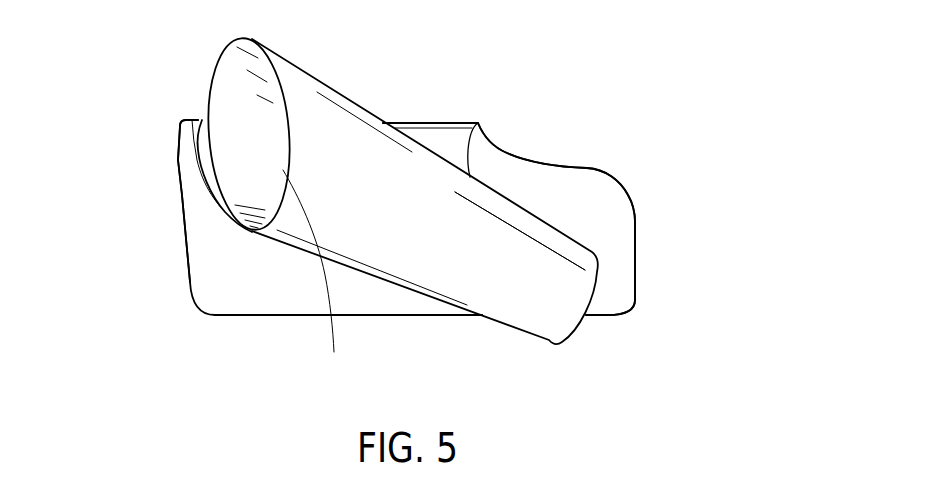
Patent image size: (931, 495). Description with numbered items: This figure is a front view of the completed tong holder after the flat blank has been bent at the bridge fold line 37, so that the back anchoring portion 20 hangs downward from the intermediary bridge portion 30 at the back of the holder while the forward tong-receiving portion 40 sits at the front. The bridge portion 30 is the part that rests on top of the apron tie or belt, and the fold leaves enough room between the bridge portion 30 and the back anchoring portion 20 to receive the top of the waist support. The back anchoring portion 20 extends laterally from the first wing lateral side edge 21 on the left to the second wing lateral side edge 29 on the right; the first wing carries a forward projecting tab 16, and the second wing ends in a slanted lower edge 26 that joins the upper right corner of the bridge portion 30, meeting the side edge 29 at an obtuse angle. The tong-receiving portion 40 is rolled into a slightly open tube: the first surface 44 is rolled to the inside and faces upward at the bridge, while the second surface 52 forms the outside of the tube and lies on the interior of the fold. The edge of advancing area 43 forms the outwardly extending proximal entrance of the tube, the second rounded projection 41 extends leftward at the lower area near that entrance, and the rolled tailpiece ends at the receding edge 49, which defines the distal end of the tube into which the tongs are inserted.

The projecting tab 16 is at (200, 120).
The back anchoring portion 20 is at (655, 181).
The first wing lateral side edge 21 is at (178, 188).
The lower edge 26 is at (593, 166).
The second wing lateral side edge 29 is at (635, 253).
The intermediary bridge portion 30 is at (502, 131).
The fold line 37 is at (447, 123).
The forward tong-receiving portion 40 is at (600, 351).
The second rounded projection 41 is at (235, 176).
The edge of advancing area 43 is at (334, 352).
The first surface 44 is at (257, 145).
The receding edge 49 is at (593, 296).
The second surface 52 is at (247, 286).